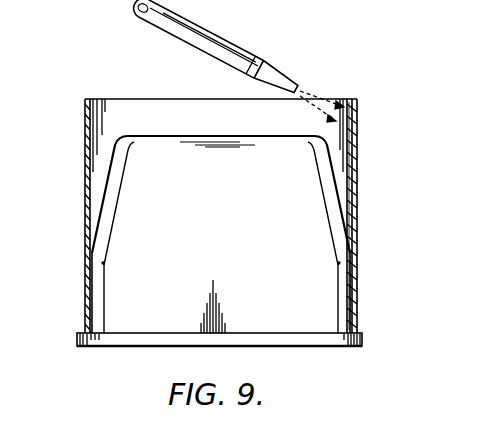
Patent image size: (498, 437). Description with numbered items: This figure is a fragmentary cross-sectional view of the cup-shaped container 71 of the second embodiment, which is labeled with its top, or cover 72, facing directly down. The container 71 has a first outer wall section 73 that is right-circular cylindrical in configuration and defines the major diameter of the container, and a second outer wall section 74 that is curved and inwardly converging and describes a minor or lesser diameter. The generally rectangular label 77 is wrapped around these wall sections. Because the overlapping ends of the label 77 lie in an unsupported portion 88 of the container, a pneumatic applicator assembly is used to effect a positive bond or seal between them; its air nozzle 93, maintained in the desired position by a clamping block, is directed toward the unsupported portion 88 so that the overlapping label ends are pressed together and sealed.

The air nozzle 93 is at (230, 26).
The unsupported portion 88 is at (79, 101).
The label 77 is at (352, 298).
The cup-shaped container 71 is at (220, 231).
The second outer wall section 74 is at (118, 186).
The first outer wall section 73 is at (106, 268).
The cover 72 is at (150, 347).